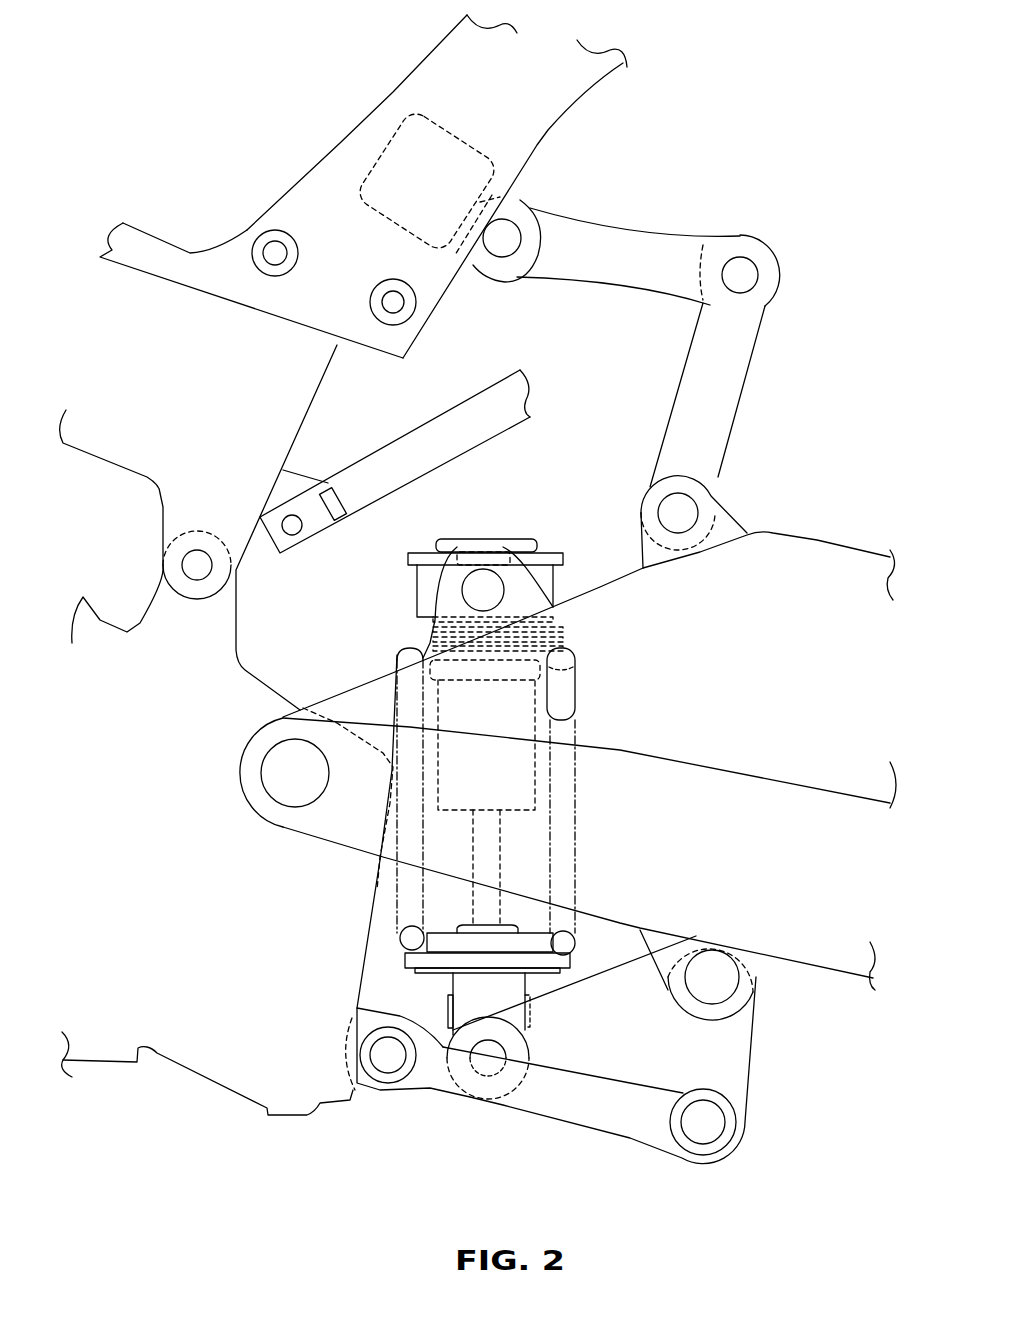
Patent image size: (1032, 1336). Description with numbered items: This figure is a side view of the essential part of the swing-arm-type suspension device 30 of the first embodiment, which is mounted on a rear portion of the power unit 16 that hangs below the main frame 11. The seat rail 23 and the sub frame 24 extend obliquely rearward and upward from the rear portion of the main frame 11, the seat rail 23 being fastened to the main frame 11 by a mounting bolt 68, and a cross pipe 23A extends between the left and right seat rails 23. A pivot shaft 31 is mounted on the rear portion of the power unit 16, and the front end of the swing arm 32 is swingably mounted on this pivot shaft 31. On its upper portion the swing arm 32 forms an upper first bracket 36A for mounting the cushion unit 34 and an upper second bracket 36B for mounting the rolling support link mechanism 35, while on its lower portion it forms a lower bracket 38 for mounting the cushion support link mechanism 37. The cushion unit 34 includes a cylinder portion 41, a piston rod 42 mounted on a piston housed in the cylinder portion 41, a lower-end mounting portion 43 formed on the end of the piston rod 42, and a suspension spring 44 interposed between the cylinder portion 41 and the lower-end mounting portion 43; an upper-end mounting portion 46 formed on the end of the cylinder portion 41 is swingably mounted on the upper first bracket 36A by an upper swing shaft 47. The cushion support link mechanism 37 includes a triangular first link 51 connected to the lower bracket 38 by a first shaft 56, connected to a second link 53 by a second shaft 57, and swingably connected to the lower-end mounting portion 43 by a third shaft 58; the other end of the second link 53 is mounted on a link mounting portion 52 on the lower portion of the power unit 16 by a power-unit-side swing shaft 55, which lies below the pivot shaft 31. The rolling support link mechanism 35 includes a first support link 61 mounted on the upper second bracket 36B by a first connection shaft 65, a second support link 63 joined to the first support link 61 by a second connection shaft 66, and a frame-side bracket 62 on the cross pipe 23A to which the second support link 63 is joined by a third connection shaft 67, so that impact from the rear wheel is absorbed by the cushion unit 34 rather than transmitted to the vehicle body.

The main frame 11 is at (137, 527).
The power unit 16 is at (193, 1075).
The seat rail 23 is at (433, 63).
The cross pipe 23A is at (367, 162).
The sub frame 24 is at (385, 473).
The swing-arm-type suspension device 30 is at (823, 213).
The pivot shaft 31 is at (257, 773).
The swing arm 32 is at (817, 540).
The cushion unit 34 is at (457, 538).
The rolling support link mechanism 35 is at (677, 223).
The upper first bracket 36A is at (547, 583).
The upper second bracket 36B is at (743, 520).
The cushion support link mechanism 37 is at (758, 1067).
The lower bracket 38 is at (750, 1027).
The cylinder portion 41 is at (578, 707).
The piston rod 42 is at (502, 845).
The lower-end mounting portion 43 is at (527, 942).
The suspension spring 44 is at (412, 928).
The upper-end mounting portion 46 is at (417, 587).
The upper swing shaft 47 is at (485, 550).
The first link 51 is at (747, 1108).
The link mounting portion 52 is at (373, 1093).
The second link 53 is at (607, 1133).
The power-unit-side swing shaft 55 is at (388, 1055).
The first shaft 56 is at (712, 977).
The second shaft 57 is at (715, 1140).
The third shaft 58 is at (483, 1077).
The first support link 61 is at (717, 400).
The frame-side bracket 62 is at (517, 190).
The second support link 63 is at (613, 233).
The first connection shaft 65 is at (672, 508).
The second connection shaft 66 is at (743, 275).
The third connection shaft 67 is at (502, 240).
The mounting bolt 68 is at (260, 240).